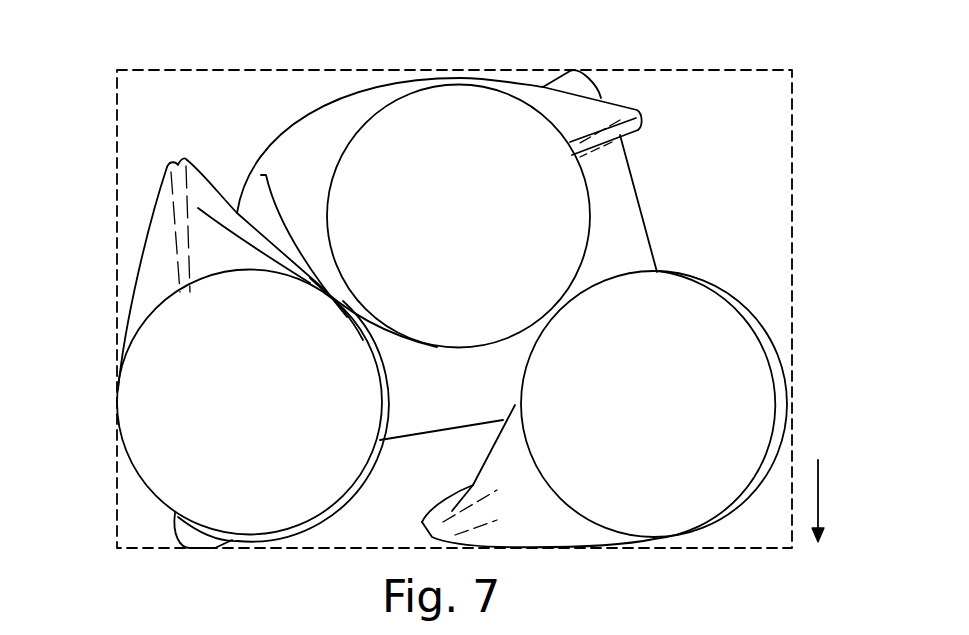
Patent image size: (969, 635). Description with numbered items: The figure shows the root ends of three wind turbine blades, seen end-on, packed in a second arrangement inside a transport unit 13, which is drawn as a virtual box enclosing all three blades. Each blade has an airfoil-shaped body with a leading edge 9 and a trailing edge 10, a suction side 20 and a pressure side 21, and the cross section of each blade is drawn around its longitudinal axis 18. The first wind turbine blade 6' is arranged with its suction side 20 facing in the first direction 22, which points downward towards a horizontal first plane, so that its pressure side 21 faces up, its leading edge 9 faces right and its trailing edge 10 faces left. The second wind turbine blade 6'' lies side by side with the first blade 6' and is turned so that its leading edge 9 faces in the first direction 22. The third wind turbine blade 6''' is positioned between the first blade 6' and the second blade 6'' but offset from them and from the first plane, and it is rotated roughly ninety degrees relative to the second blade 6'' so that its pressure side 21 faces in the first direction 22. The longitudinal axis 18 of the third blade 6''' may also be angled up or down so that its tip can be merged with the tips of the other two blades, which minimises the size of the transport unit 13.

The first wind turbine blade 6' is at (654, 404).
The second wind turbine blade 6'' is at (249, 402).
The third wind turbine blade 6''' is at (458, 216).
The leading edge 9 is at (282, 537).
The trailing edge 10 is at (168, 162).
The transport unit 13 is at (722, 73).
The longitudinal axis 18 is at (457, 217).
The suction side 20 is at (400, 100).
The pressure side 21 is at (627, 272).
The first direction 22 is at (818, 500).